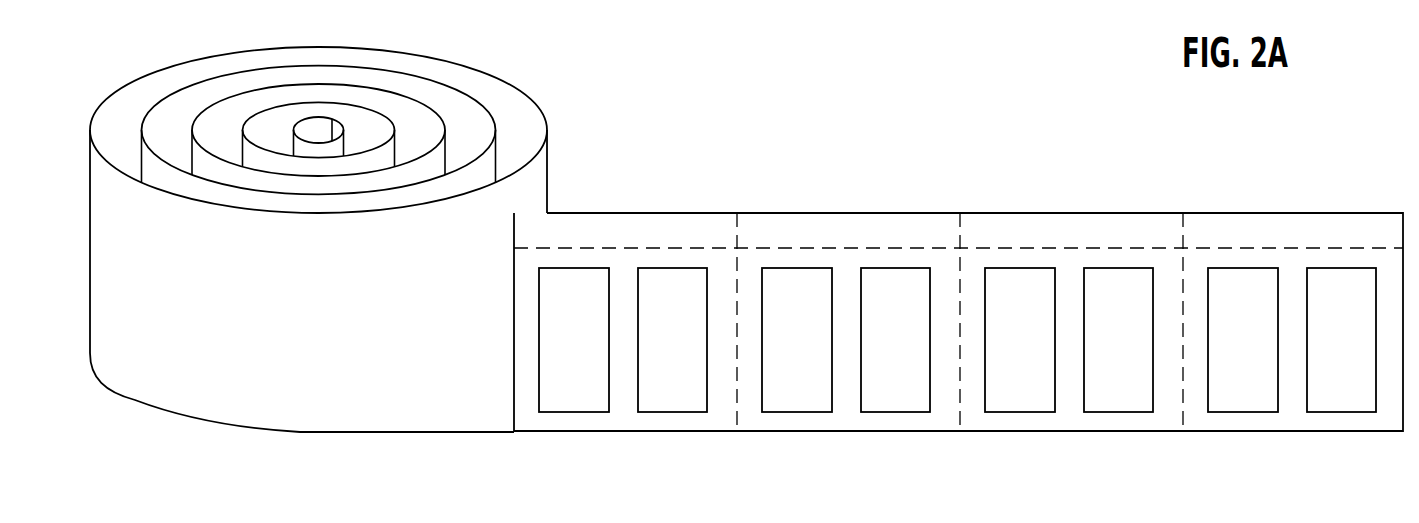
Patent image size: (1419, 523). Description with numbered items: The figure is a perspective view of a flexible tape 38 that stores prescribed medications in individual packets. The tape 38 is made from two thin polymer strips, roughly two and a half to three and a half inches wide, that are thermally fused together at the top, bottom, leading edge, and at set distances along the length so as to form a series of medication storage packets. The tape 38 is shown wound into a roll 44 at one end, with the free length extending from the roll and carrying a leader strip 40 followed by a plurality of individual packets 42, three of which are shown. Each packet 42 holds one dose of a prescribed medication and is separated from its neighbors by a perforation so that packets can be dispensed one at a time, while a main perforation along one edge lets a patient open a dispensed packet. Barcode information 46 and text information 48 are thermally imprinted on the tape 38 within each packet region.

The flexible tape 38 is at (840, 178).
The leader strip 40 is at (1310, 213).
The individual packets 42 is at (693, 213).
The roll 44 is at (527, 92).
The barcode information 46 is at (590, 412).
The text information 48 is at (695, 412).